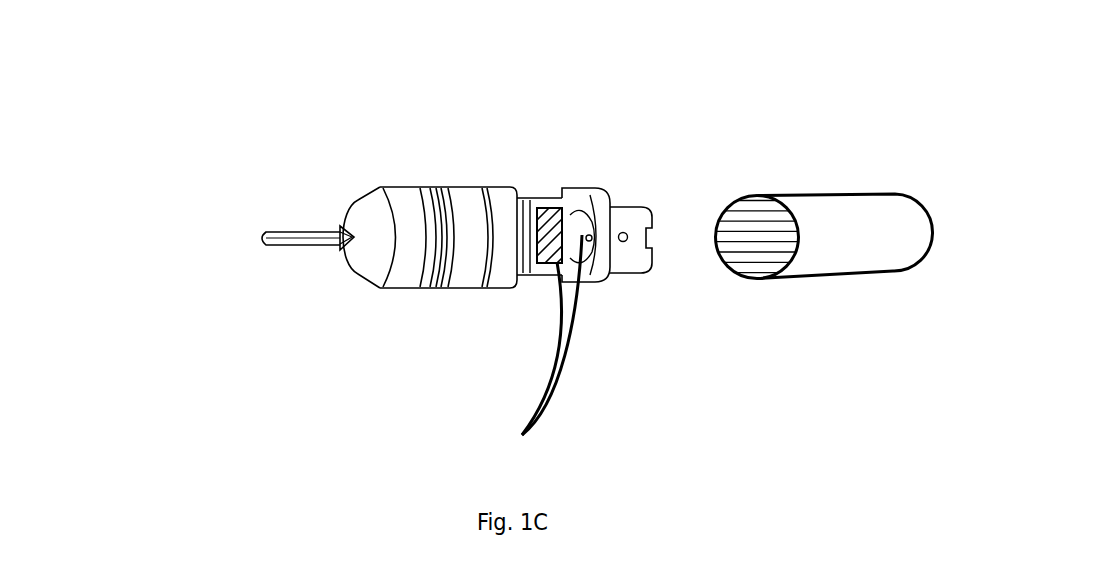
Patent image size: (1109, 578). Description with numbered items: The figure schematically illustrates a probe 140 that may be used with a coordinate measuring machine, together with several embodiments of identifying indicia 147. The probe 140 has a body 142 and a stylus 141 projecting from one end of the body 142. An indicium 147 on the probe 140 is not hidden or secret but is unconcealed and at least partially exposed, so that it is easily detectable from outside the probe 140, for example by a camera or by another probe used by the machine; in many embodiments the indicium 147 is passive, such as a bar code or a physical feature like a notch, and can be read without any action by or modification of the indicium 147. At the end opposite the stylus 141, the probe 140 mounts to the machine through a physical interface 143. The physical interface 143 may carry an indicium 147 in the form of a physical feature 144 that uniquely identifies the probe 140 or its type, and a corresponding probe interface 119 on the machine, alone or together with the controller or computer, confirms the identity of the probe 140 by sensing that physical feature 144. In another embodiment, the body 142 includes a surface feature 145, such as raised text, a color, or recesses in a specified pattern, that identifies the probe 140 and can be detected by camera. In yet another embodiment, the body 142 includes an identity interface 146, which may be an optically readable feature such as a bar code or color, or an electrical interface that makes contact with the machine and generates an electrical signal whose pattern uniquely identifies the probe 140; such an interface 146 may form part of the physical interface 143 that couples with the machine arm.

The probe interface 119 is at (882, 247).
The probe 140 is at (501, 117).
The stylus 141 is at (278, 218).
The body 142 is at (397, 175).
The physical interface 143 is at (629, 170).
The physical feature 144 is at (653, 238).
The surface feature 145 is at (589, 240).
The identity interface 146 is at (548, 262).
The indicium 147 is at (527, 342).